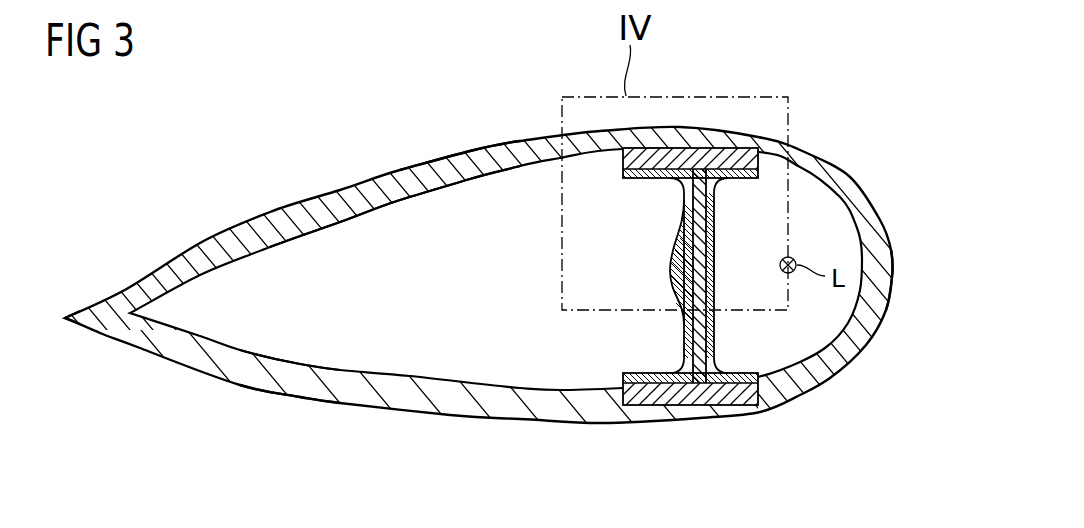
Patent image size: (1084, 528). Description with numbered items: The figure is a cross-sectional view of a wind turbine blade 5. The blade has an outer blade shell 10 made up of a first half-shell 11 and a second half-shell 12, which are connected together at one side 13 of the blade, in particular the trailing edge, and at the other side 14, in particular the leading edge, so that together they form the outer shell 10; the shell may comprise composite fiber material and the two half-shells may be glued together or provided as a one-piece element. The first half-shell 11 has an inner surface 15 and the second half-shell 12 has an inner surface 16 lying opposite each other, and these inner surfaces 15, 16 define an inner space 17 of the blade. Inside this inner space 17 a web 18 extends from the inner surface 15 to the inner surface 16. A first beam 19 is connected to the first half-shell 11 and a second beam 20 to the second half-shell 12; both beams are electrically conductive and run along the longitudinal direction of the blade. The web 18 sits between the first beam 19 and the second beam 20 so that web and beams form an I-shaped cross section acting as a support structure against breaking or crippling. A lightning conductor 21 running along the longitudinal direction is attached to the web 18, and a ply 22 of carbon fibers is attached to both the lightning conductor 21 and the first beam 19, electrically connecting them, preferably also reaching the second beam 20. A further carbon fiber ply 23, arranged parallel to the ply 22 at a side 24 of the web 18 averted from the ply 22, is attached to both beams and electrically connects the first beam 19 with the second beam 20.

The wind turbine blade 5 is at (542, 257).
The outer blade shell 10 is at (202, 233).
The first half-shell 11 is at (463, 163).
The second half-shell 12 is at (280, 384).
The one side 13 is at (68, 317).
The other side 14 is at (894, 278).
The inner surface 15 is at (340, 230).
The inner surface 16 is at (408, 366).
The inner space 17 is at (465, 283).
The web 18 is at (692, 220).
The first beam 19 is at (727, 158).
The second beam 20 is at (691, 396).
The lightning conductor 21 is at (671, 270).
The ply 22 is at (684, 327).
The further ply 23 is at (709, 203).
The side 24 is at (715, 253).